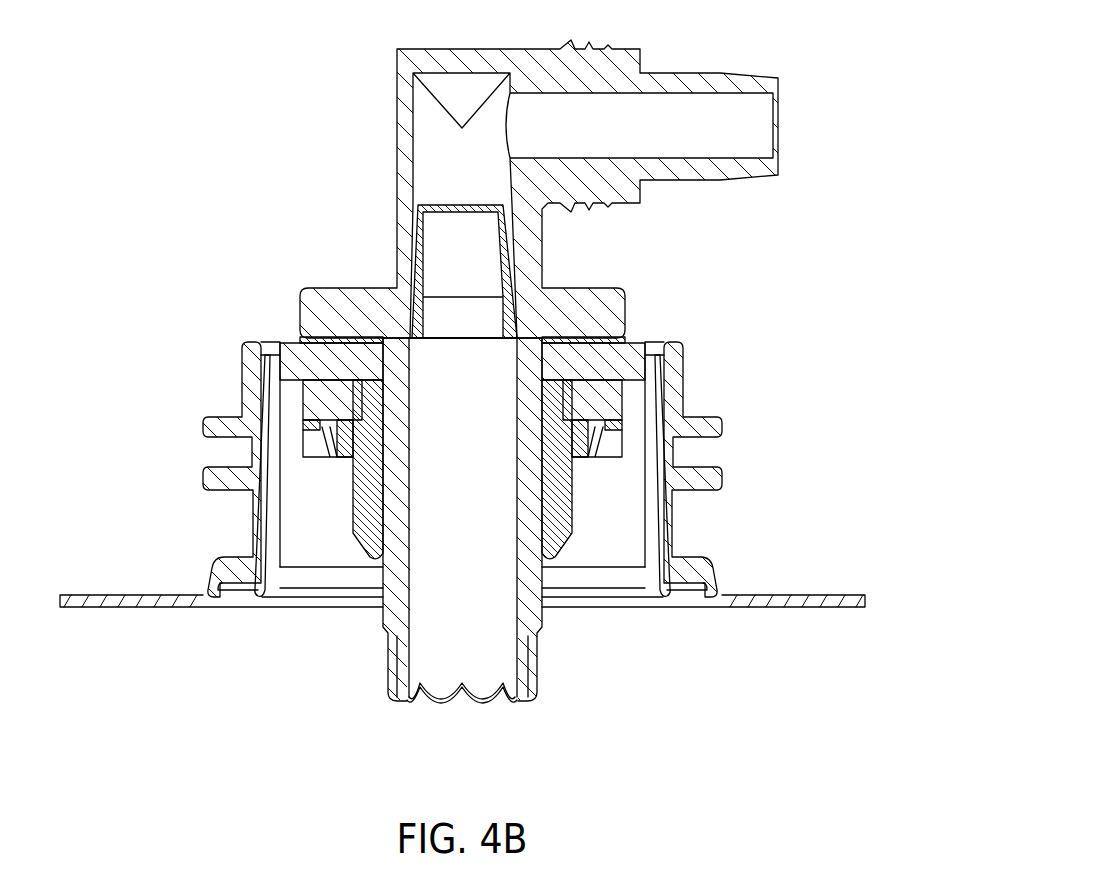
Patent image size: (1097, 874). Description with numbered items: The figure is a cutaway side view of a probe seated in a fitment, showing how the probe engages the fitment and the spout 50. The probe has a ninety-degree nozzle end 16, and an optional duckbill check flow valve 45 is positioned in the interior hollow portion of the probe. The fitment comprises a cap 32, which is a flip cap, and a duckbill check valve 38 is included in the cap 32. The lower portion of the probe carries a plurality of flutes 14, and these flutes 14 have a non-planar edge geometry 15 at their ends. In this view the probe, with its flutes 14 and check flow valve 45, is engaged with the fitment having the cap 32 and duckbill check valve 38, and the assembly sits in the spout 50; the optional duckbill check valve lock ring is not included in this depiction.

The 90 degree nozzle end 16 is at (685, 72).
The check flow valve 45 is at (442, 265).
The cap 32 is at (686, 353).
The duckbill check valve 38 is at (573, 495).
The flutes 14 is at (386, 680).
The non-planar edge geometry 15 is at (440, 701).
The spout 50 is at (813, 595).